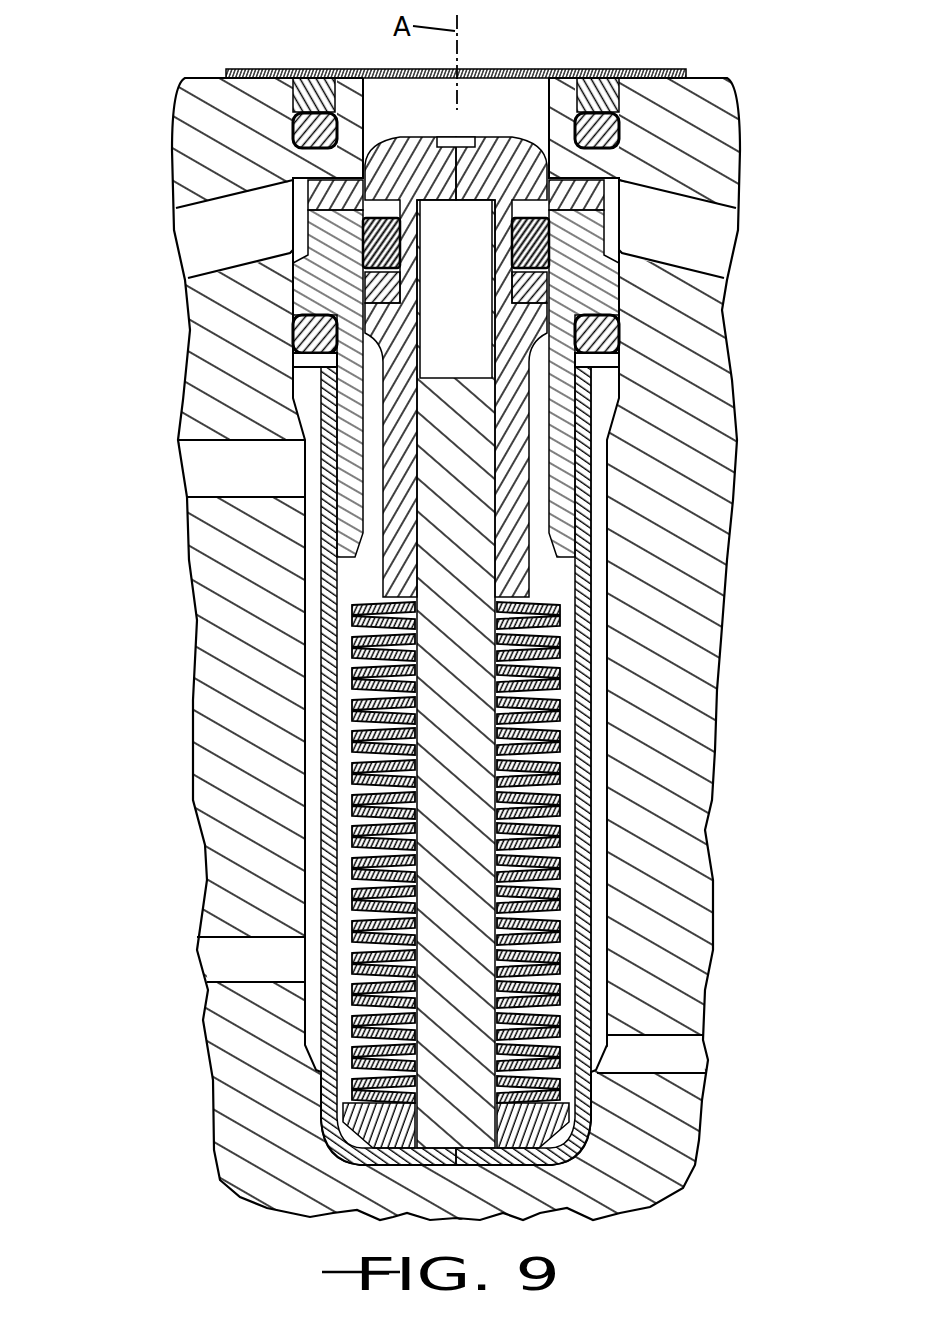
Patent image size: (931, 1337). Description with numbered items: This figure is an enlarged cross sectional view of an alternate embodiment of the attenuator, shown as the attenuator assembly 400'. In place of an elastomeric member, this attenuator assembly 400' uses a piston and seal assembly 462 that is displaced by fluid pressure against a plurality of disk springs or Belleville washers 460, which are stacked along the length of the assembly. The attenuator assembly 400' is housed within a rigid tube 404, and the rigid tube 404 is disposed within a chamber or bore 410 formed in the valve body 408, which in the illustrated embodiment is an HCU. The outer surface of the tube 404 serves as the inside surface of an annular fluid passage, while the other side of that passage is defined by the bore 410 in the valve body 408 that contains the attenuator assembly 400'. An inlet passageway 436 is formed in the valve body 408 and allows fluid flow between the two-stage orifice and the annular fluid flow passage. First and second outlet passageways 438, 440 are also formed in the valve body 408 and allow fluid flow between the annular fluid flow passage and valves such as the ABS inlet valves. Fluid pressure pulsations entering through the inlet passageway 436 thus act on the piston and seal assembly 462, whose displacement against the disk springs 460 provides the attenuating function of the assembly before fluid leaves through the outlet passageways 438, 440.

The attenuator assembly 400' is at (366, 103).
The rigid tube 404 is at (600, 838).
The valve body 408 is at (700, 815).
The bore 410 is at (600, 724).
The inlet passageway 436 is at (670, 1078).
The first outlet passageway 438 is at (215, 496).
The second outlet passageway 440 is at (228, 981).
The disk springs 460 is at (356, 703).
The piston and seal assembly 462 is at (385, 166).